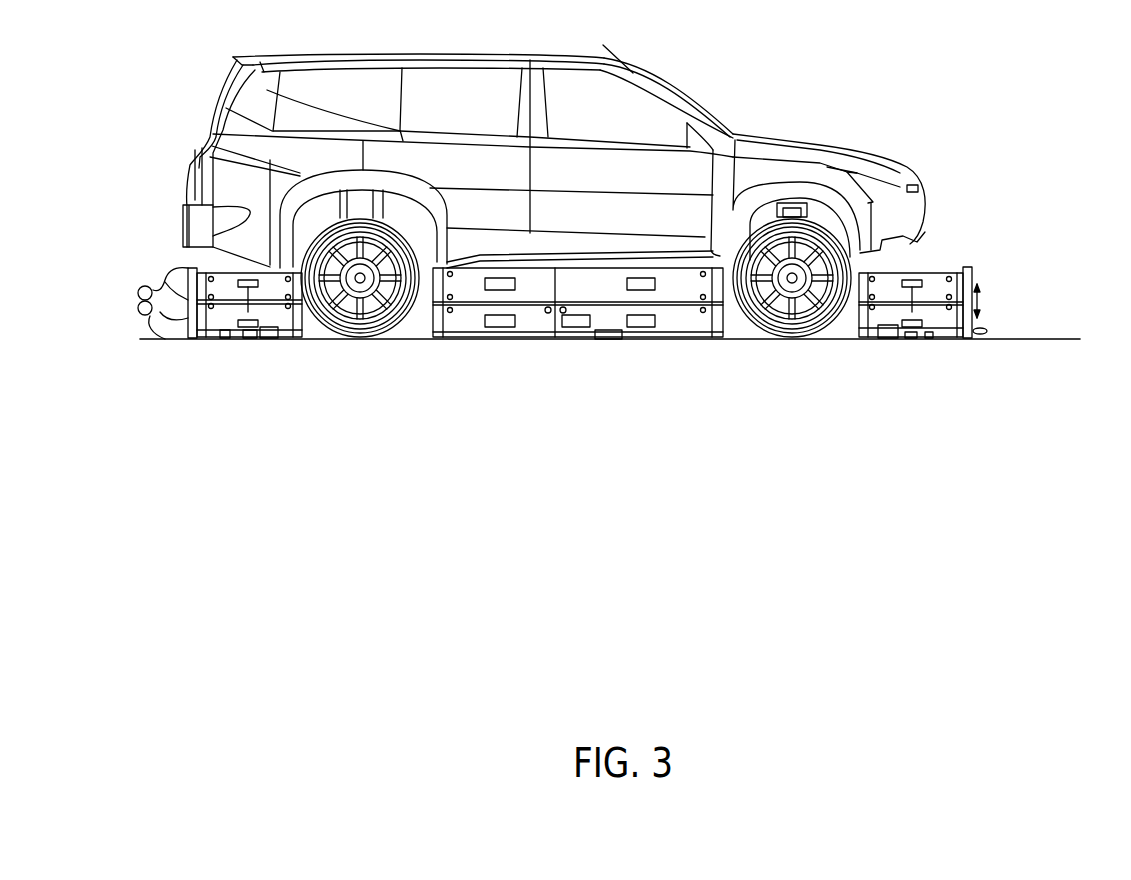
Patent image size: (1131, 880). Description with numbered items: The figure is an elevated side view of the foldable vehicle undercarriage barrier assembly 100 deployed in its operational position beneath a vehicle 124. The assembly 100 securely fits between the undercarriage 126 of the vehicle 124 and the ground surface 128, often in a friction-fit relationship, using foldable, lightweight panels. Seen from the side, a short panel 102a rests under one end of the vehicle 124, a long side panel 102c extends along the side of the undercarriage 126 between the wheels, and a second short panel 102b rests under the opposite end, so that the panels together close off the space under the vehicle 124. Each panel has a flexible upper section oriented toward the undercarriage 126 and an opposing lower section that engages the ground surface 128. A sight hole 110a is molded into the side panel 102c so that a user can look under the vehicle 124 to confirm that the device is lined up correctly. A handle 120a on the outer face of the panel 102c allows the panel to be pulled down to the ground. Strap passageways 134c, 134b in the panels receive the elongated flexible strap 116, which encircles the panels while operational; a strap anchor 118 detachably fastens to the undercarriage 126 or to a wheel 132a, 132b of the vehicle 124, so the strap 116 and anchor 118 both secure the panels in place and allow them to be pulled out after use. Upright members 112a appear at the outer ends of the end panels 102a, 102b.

The foldable vehicle undercarriage barrier assembly 100 is at (960, 185).
The vehicle 124 is at (254, 96).
The strap 116 is at (182, 280).
The strap anchor 118 is at (142, 318).
The end stop post 112a is at (197, 318).
The panel 102a is at (255, 355).
The wheel 132a is at (382, 318).
The undercarriage 126 is at (490, 270).
The panel 102c is at (483, 360).
The sight hole 110a is at (548, 314).
The strap passageway 134c is at (600, 350).
The handle 120a is at (645, 325).
The wheel 132b is at (790, 318).
The panel 102b is at (992, 322).
The strap passageway 134b is at (888, 350).
The ground surface 128 is at (943, 340).